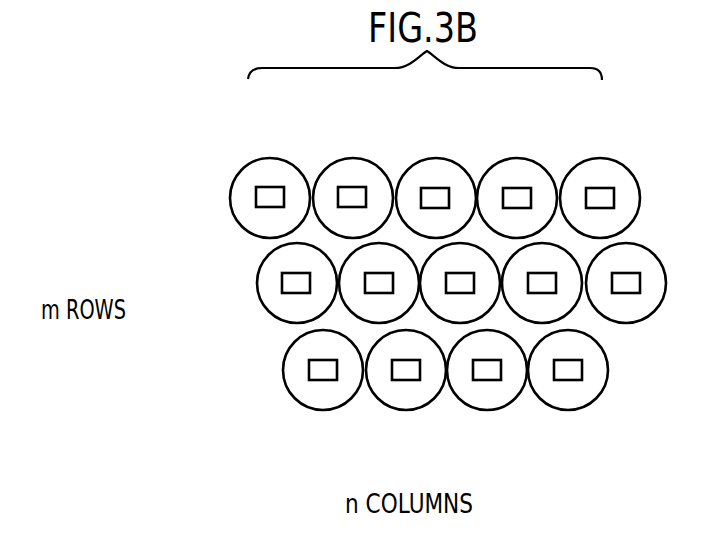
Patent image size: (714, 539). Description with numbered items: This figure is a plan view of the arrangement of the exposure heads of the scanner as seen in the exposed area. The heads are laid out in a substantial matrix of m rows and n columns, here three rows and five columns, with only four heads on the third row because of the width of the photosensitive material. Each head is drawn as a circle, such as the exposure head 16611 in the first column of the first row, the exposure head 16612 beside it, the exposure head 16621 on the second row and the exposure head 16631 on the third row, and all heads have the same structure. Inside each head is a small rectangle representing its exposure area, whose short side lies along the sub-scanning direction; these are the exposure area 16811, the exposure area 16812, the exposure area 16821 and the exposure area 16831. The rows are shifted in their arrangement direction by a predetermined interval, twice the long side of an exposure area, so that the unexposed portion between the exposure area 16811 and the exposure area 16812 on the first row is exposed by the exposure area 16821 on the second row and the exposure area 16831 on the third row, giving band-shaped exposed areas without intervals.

The exposure head 16611 is at (231, 196).
The exposure area 16811 is at (271, 196).
The exposure head 16612 is at (353, 158).
The exposure area 16812 is at (352, 197).
The exposure head 16621 is at (258, 282).
The exposure area 16821 is at (296, 284).
The exposure head 16631 is at (292, 400).
The exposure area 16831 is at (322, 372).